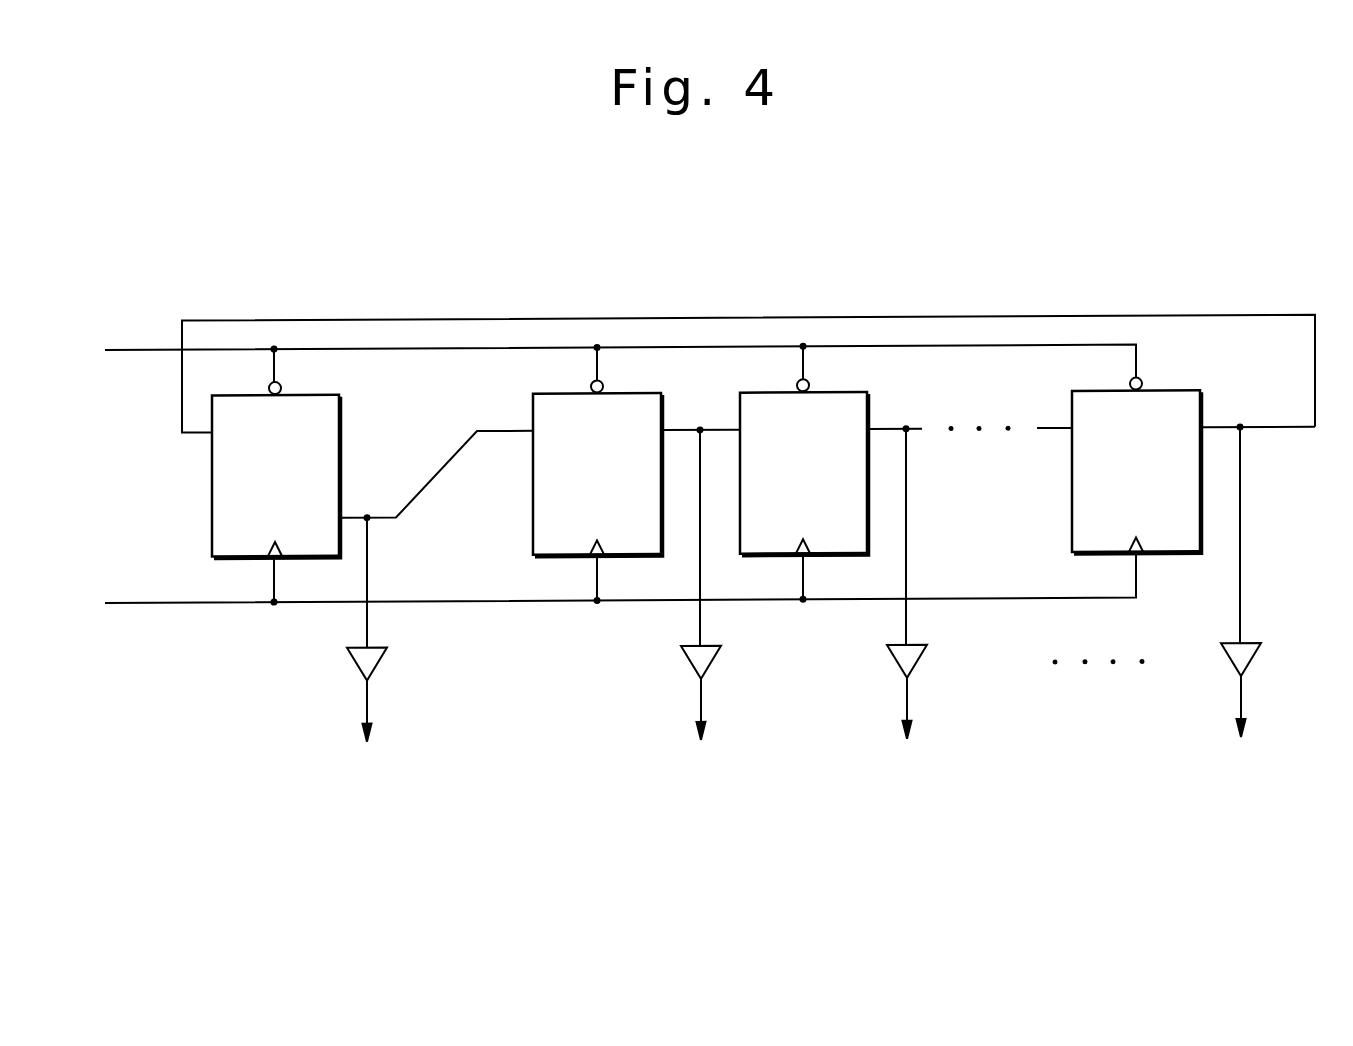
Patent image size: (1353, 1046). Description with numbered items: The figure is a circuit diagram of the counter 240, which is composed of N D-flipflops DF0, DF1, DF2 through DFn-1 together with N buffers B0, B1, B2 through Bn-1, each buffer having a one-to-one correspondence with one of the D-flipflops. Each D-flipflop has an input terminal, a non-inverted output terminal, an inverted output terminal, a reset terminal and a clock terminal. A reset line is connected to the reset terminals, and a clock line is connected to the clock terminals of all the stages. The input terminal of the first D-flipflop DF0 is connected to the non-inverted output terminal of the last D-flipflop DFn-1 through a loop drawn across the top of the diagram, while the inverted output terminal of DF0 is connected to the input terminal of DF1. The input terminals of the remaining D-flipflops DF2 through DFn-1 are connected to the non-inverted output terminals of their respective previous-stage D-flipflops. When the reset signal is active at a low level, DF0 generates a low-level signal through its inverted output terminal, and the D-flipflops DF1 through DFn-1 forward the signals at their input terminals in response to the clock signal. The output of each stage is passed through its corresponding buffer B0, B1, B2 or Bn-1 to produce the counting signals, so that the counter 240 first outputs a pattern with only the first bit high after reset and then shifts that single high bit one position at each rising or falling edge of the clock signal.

The counter 240 is at (147, 225).
The D-flipflop DF0 is at (313, 396).
The D-flipflop DF1 is at (635, 396).
The D-flipflop DF2 is at (841, 396).
The D-flipflop DFn-1 is at (1174, 396).
The buffer B0 is at (376, 668).
The buffer B1 is at (710, 668).
The buffer B2 is at (916, 668).
The buffer Bn-1 is at (1250, 668).